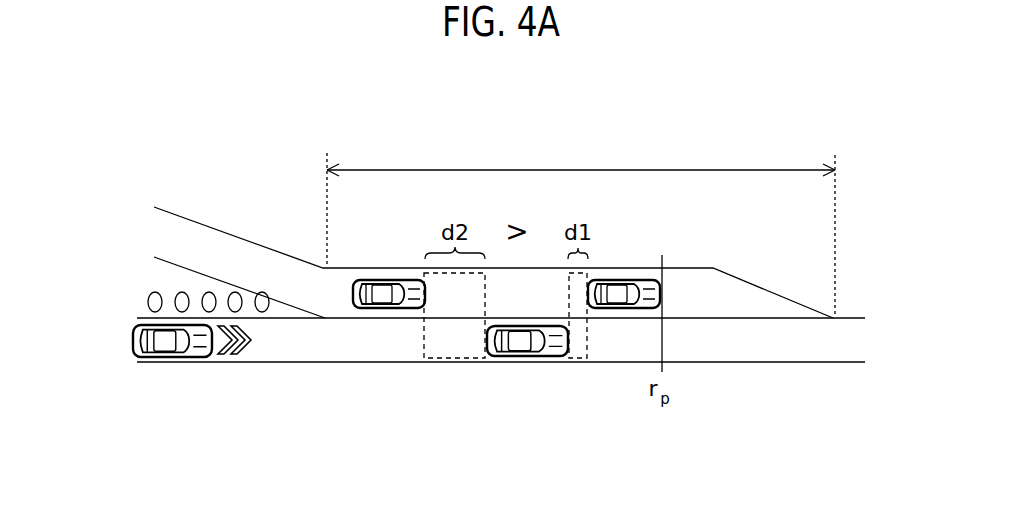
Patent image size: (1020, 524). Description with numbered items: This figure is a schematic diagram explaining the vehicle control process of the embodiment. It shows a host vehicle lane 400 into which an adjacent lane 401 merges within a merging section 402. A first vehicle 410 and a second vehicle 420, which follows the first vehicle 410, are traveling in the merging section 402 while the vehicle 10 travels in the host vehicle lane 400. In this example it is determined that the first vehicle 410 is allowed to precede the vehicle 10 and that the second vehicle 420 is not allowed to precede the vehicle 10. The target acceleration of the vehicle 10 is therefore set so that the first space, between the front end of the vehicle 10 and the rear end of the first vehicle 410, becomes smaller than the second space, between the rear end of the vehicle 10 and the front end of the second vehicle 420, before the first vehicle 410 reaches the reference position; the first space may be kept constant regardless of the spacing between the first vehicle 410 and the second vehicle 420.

The vehicle 10 is at (502, 359).
The host vehicle lane 400 is at (326, 344).
The adjacent lane 401 is at (192, 234).
The merging section 402 is at (580, 170).
The first vehicle 410 is at (630, 280).
The second vehicle 420 is at (376, 280).